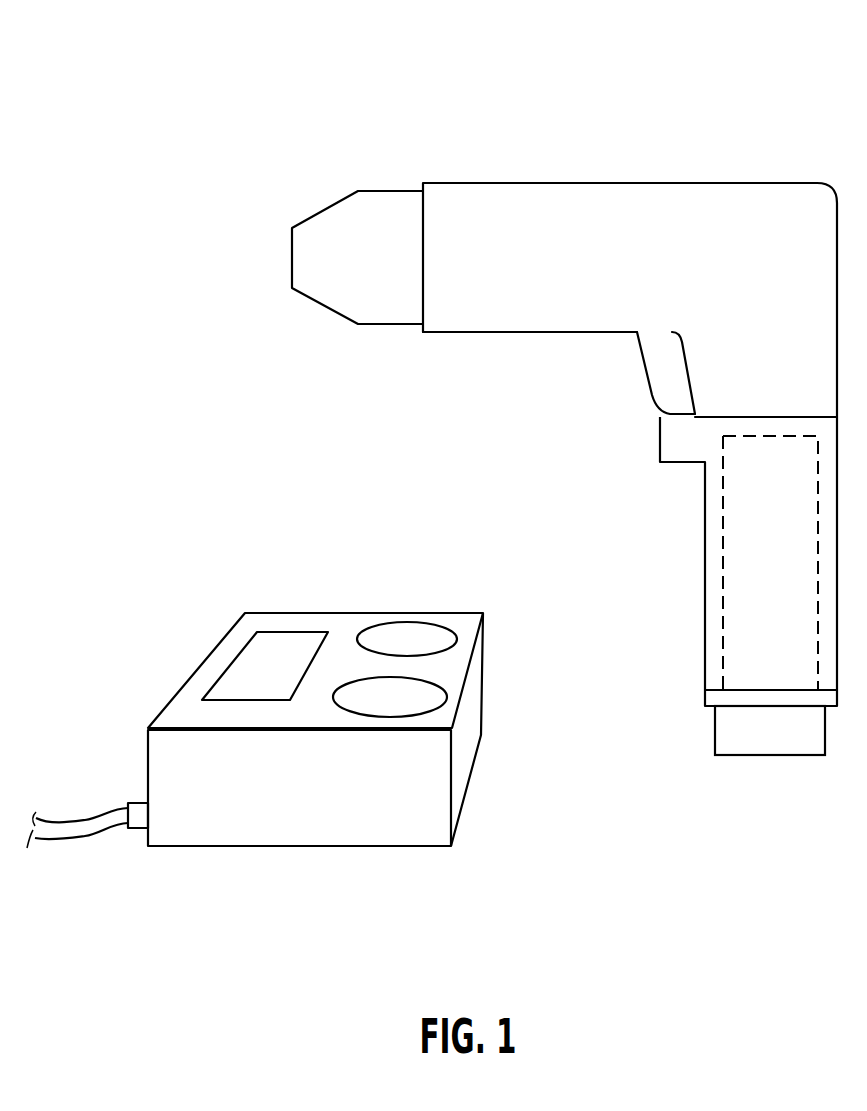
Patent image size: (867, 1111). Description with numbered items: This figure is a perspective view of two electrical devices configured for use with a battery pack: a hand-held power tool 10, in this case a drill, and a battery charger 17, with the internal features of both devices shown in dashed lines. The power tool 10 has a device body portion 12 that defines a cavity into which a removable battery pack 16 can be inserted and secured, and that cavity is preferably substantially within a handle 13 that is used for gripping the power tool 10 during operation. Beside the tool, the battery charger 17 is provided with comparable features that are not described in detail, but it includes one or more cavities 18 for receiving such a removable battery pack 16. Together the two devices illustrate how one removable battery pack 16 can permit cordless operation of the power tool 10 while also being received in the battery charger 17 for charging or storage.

The hand-held power tool 10 is at (703, 153).
The device body portion 12 is at (715, 607).
The handle 13 is at (745, 535).
The removable battery pack 16 is at (745, 728).
The battery charger 17 is at (296, 817).
The cavities 18 is at (409, 640).